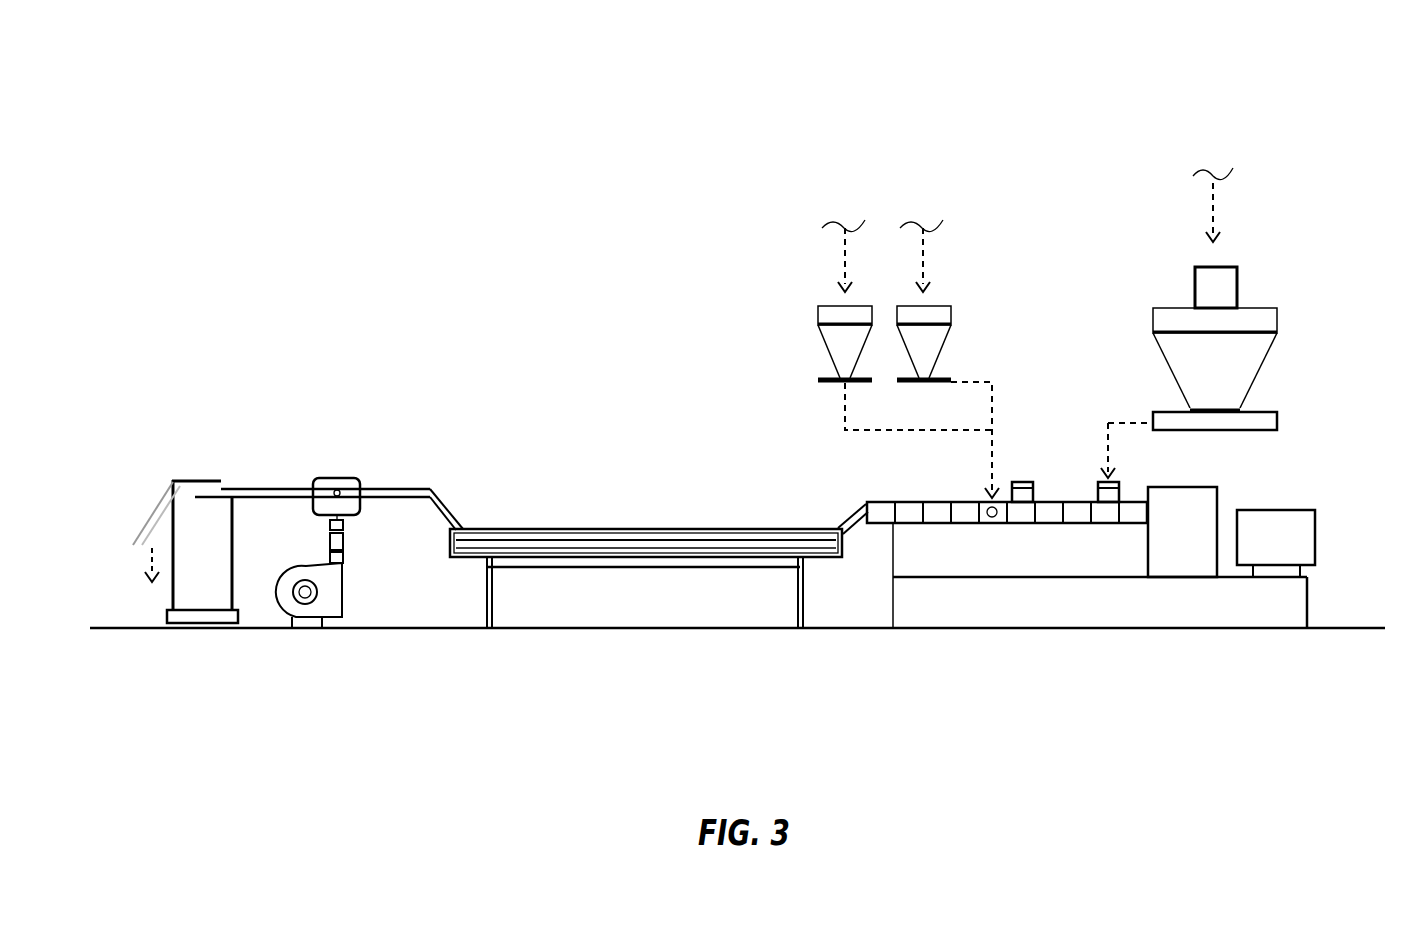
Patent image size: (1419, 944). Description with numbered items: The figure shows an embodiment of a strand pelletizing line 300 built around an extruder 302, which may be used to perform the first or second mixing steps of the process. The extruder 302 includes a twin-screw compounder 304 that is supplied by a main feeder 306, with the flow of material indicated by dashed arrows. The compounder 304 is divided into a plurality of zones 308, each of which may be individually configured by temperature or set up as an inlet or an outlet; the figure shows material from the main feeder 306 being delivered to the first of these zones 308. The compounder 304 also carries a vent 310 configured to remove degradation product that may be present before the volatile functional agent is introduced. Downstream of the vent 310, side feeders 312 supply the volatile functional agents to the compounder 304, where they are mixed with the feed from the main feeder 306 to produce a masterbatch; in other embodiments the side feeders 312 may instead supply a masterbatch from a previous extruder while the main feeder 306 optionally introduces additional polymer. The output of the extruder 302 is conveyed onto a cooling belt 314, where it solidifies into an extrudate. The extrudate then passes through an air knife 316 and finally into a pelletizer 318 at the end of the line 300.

The strand pelletizing line 300 is at (256, 150).
The extruder 302 is at (1276, 486).
The twin-screw compounder 304 is at (1058, 502).
The main feeder 306 is at (1153, 322).
The zones 308 is at (1113, 523).
The vent 310 is at (1022, 480).
The side feeder 312 is at (818, 315).
The cooling belt 314 is at (650, 528).
The air knife 316 is at (281, 612).
The pelletizer 318 is at (197, 480).